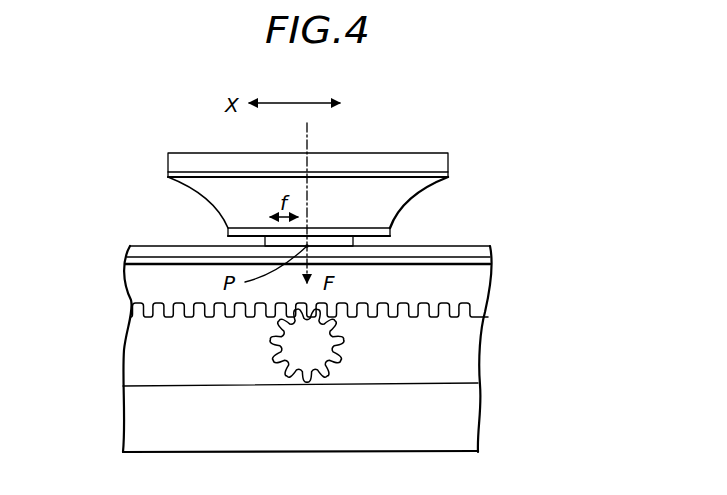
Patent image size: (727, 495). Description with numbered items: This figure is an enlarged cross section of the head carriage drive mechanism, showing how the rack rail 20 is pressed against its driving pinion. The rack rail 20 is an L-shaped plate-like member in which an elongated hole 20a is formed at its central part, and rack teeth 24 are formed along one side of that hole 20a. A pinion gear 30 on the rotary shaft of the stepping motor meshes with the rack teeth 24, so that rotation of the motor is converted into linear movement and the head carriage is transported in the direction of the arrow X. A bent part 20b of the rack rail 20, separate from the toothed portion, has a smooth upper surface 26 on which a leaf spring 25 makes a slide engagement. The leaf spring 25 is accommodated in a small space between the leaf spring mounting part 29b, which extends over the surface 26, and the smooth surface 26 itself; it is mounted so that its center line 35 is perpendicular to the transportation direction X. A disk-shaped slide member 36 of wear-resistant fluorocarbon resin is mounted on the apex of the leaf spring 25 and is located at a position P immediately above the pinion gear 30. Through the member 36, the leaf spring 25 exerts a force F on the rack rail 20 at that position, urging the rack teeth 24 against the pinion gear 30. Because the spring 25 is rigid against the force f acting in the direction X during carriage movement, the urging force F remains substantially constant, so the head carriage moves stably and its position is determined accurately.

The rack rail 20 is at (344, 310).
The elongated hole 20a is at (463, 357).
The bent part 20b is at (465, 250).
The rack teeth 24 is at (252, 318).
The leaf spring 25 is at (357, 172).
The smooth upper surface 26 is at (443, 244).
The leaf spring mounting part 29b is at (370, 165).
The pinion gear 30 is at (340, 343).
The center line 35 is at (307, 136).
The slide member 36 is at (320, 240).